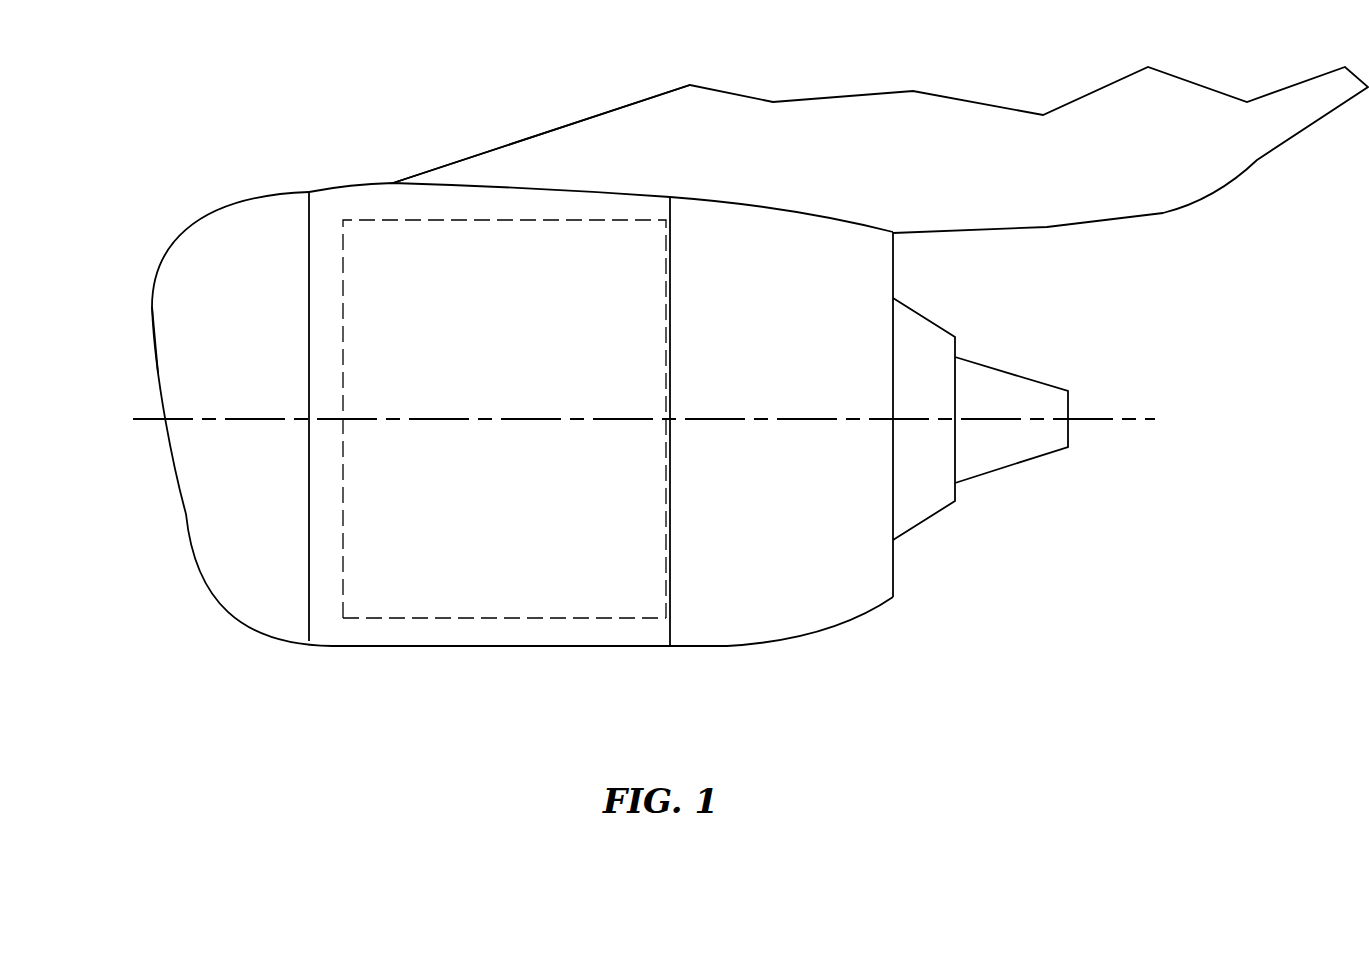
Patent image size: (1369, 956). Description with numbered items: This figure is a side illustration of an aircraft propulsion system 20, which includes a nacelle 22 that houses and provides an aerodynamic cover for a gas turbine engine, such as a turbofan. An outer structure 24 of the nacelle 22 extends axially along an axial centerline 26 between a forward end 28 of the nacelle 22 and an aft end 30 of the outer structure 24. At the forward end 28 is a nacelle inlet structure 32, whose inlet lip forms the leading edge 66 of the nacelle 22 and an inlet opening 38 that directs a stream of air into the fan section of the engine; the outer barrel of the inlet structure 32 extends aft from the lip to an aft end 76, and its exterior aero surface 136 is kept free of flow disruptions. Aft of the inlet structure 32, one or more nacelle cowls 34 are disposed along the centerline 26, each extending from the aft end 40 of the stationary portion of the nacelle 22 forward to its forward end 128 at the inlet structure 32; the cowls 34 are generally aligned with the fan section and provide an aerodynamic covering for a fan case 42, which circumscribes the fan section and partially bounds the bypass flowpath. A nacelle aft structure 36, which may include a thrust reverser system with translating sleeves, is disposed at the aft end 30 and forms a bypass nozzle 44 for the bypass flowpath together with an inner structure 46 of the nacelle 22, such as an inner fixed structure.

The propulsion system 20 is at (140, 138).
The nacelle 22 is at (340, 170).
The outer structure 24 is at (385, 182).
The axial centerline 26 is at (1140, 422).
The forward end 28 is at (152, 307).
The leading edge 66 is at (169, 410).
The aft end 30 is at (895, 263).
The nacelle inlet structure 32 is at (250, 645).
The nacelle cowl 34 is at (402, 654).
The nacelle aft structure 36 is at (807, 645).
The inlet opening 38 is at (158, 373).
The aft end of stationary portion 40 is at (703, 467).
The fan case 42 is at (483, 618).
The bypass nozzle 44 is at (895, 572).
The inner structure 46 is at (932, 518).
The aft end of outer barrel 76 is at (311, 516).
The forward end of cowl 128 is at (307, 539).
The exterior aero surface 136 is at (258, 227).